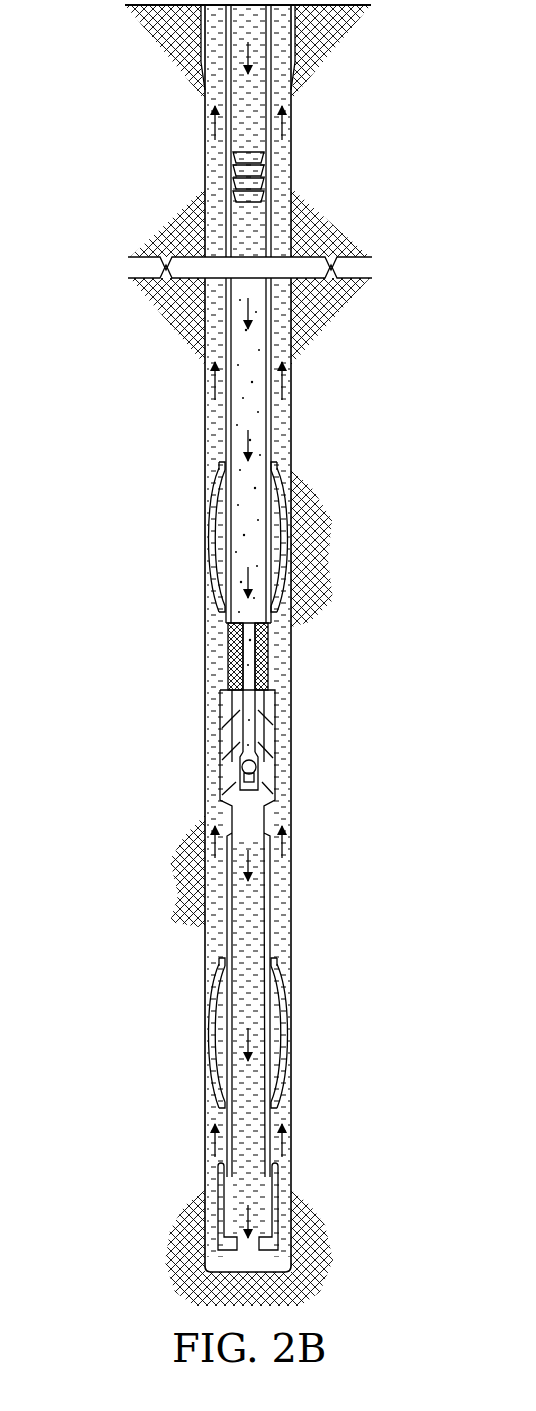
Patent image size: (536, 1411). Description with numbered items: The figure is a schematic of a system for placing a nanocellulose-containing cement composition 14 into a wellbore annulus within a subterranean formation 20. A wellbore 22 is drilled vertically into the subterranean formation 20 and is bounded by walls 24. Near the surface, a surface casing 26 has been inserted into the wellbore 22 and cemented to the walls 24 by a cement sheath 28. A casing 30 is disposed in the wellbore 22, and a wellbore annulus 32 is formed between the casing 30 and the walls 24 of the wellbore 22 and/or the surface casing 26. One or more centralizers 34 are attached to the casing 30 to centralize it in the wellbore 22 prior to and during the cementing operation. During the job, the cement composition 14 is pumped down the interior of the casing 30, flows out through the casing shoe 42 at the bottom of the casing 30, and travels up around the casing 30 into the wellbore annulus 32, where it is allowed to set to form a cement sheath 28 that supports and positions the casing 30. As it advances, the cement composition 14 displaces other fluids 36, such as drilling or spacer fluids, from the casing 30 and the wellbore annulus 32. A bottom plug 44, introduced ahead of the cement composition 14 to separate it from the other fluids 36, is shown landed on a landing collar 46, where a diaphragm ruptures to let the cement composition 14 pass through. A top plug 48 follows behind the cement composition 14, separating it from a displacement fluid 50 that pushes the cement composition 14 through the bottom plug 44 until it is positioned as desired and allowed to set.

The cement composition 14 is at (230, 318).
The subterranean formation 20 is at (135, 572).
The wellbore 22 is at (302, 432).
The walls 24 is at (284, 158).
The surface casing 26 is at (297, 52).
The cement sheath 28 is at (203, 56).
The casing 30 is at (268, 318).
The wellbore annulus 32 is at (211, 430).
The centralizers 34 is at (205, 1030).
The other fluids 36 is at (250, 868).
The casing shoe 42 is at (292, 1205).
The bottom plug 44 is at (268, 678).
The landing collar 46 is at (228, 702).
The top plug 48 is at (232, 172).
The displacement fluid 50 is at (222, 60).